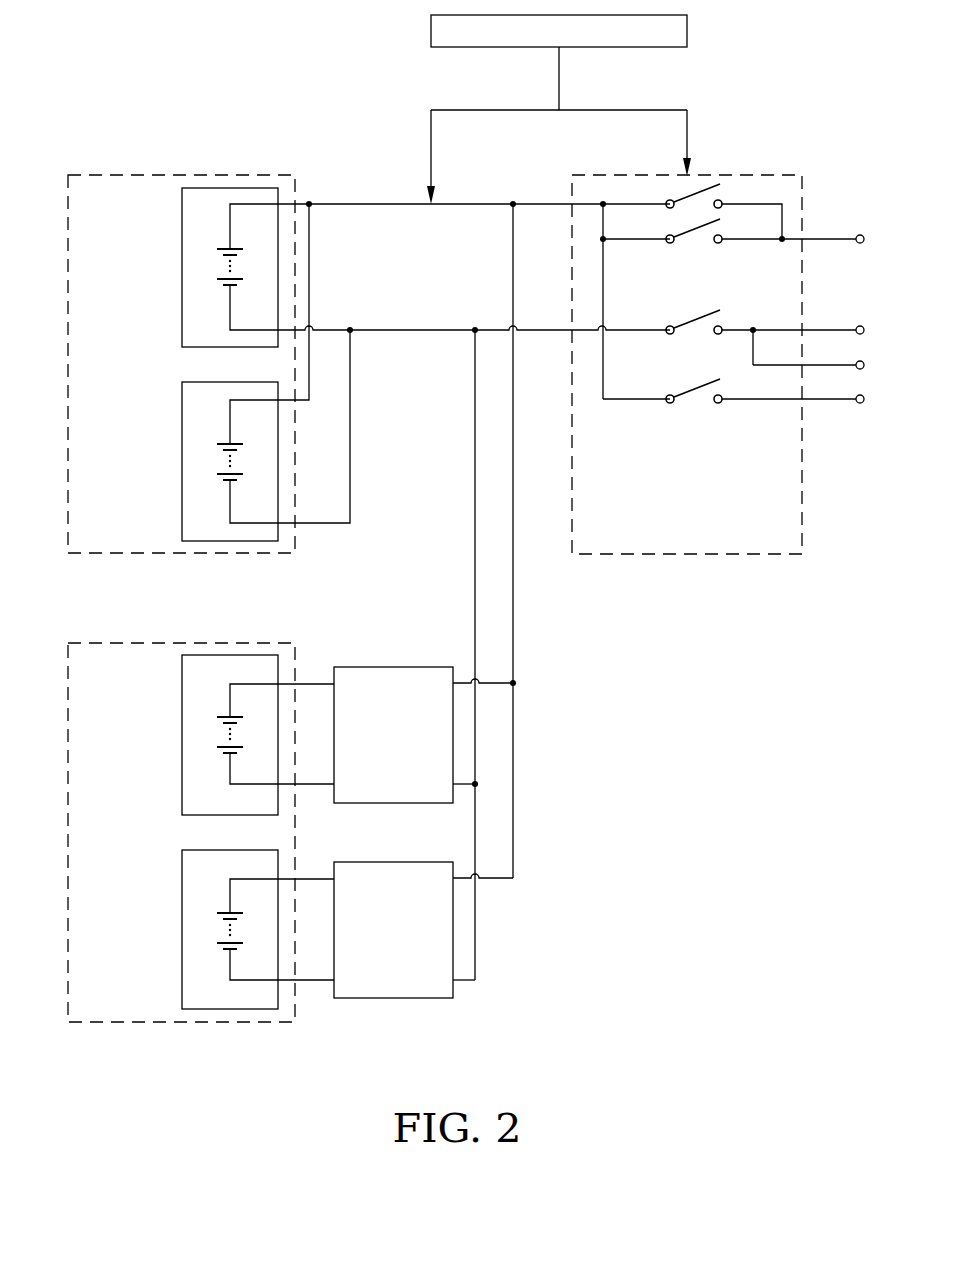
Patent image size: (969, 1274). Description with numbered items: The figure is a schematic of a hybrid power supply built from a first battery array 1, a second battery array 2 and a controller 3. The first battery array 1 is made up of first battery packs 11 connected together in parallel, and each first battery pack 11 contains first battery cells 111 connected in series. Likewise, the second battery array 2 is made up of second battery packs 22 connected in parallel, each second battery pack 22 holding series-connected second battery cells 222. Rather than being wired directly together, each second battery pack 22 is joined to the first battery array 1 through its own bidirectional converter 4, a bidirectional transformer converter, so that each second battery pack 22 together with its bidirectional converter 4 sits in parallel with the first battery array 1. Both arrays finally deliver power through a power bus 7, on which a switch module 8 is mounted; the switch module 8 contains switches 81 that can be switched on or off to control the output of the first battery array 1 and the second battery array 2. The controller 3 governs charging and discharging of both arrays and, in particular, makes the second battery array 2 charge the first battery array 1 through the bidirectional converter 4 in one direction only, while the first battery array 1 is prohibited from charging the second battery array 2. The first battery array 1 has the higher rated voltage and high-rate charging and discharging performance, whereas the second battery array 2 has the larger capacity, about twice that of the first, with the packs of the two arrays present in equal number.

The first battery array 1 is at (147, 175).
The first battery packs 11 is at (205, 188).
The first battery cells 111 is at (233, 247).
The second battery array 2 is at (100, 1022).
The second battery packs 22 is at (182, 703).
The second battery cells 222 is at (223, 716).
The controller 3 is at (688, 31).
The bidirectional converter 4 is at (401, 666).
The power bus 7 is at (824, 239).
The switch module 8 is at (735, 554).
The switches 81 is at (695, 388).